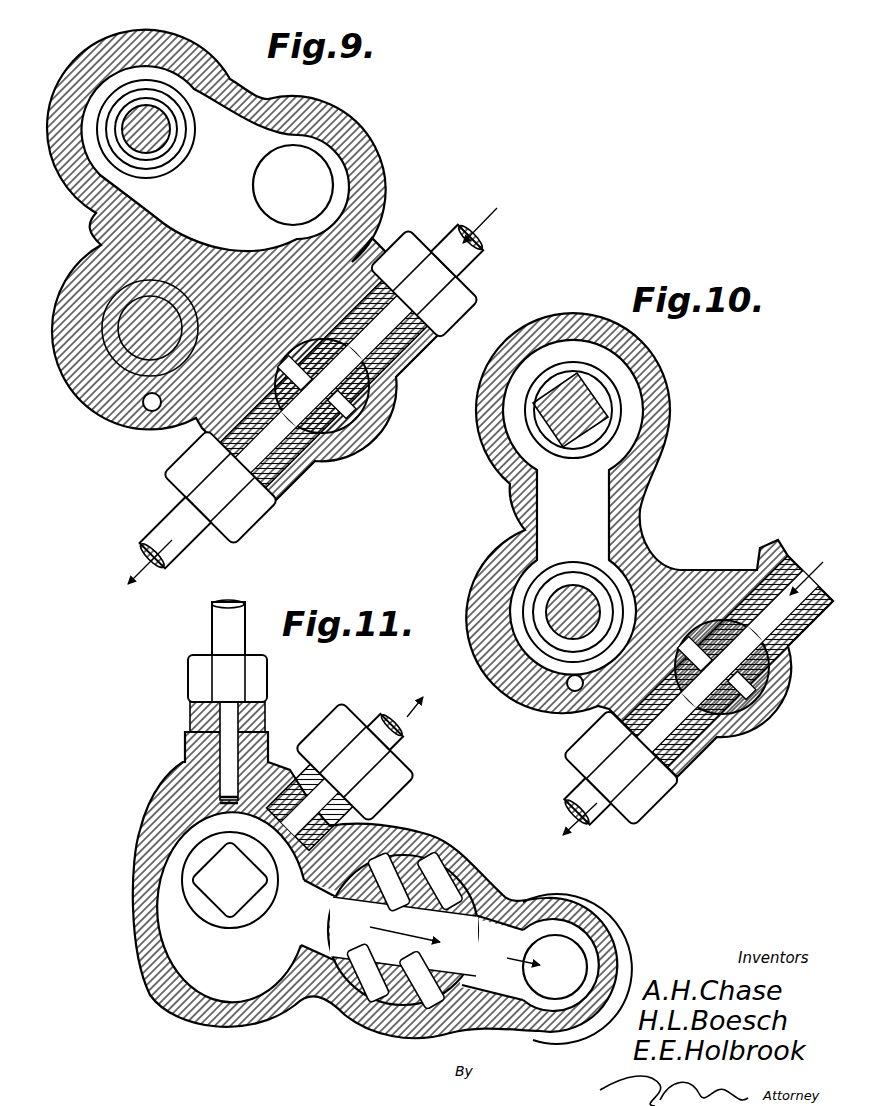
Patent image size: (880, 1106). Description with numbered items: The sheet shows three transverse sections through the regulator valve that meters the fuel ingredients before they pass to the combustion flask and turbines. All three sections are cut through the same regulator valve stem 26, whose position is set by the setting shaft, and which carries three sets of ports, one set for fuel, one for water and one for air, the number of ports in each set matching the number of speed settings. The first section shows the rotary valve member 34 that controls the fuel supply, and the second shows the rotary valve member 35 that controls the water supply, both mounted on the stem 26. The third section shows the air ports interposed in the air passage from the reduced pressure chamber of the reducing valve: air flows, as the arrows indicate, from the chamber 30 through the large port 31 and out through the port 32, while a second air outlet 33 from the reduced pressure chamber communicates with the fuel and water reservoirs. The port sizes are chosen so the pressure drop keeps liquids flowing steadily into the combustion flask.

In FIG. 9, the regulator valve stem 26 is at (363, 417).
In FIG. 10, the regulator valve stem 26 is at (753, 703).
In FIG. 11, the regulator valve stem 26 is at (490, 889).
In FIG. 11, the chamber 30 is at (333, 928).
In FIG. 11, the large port 31 is at (473, 937).
In FIG. 11, the port 32 is at (573, 963).
In FIG. 11, the second air outlet 33 is at (400, 738).
In FIG. 9, the rotary valve member 34 is at (372, 392).
In FIG. 10, the rotary valve member 35 is at (757, 677).